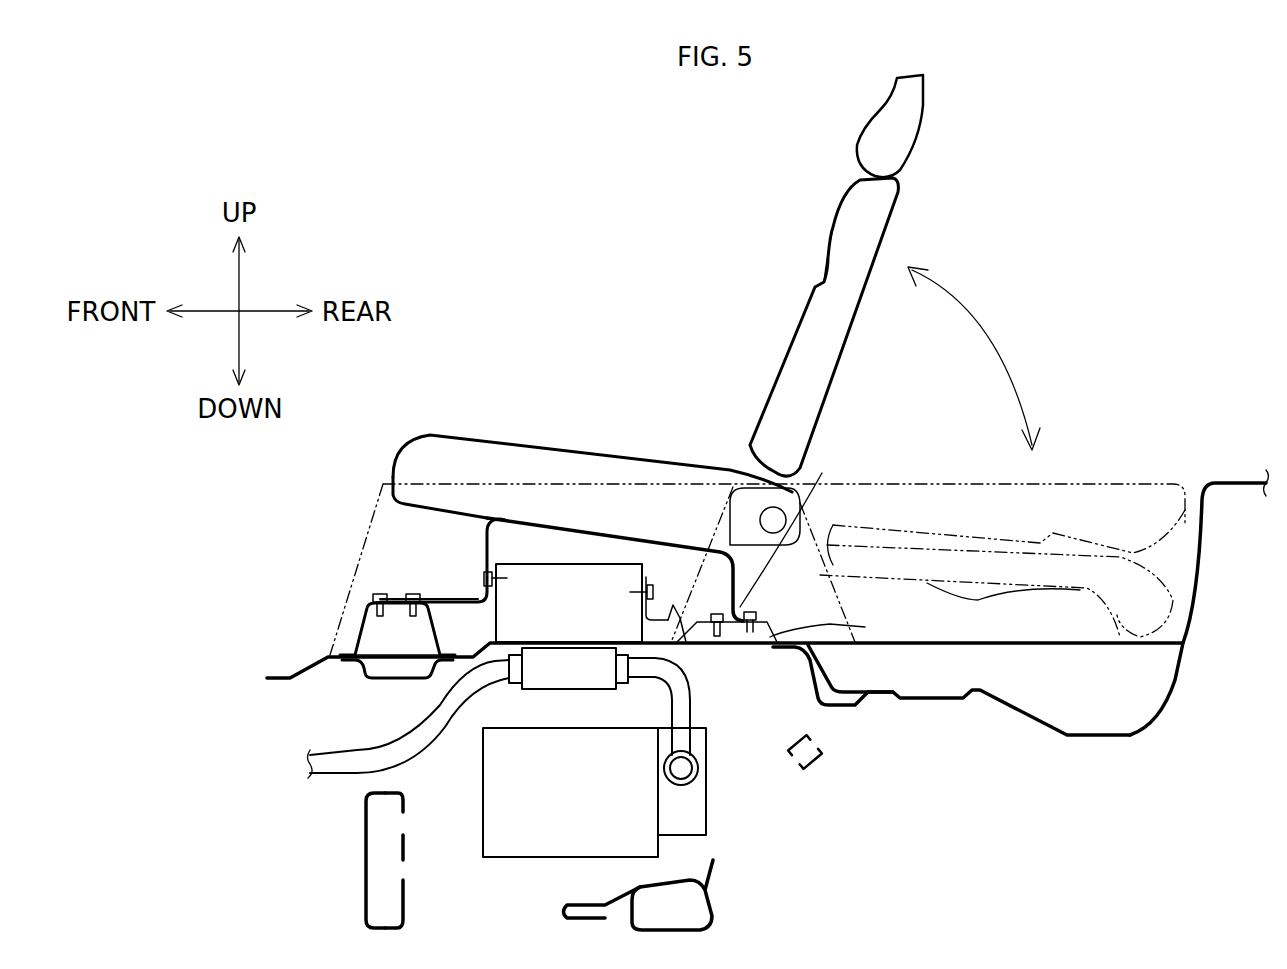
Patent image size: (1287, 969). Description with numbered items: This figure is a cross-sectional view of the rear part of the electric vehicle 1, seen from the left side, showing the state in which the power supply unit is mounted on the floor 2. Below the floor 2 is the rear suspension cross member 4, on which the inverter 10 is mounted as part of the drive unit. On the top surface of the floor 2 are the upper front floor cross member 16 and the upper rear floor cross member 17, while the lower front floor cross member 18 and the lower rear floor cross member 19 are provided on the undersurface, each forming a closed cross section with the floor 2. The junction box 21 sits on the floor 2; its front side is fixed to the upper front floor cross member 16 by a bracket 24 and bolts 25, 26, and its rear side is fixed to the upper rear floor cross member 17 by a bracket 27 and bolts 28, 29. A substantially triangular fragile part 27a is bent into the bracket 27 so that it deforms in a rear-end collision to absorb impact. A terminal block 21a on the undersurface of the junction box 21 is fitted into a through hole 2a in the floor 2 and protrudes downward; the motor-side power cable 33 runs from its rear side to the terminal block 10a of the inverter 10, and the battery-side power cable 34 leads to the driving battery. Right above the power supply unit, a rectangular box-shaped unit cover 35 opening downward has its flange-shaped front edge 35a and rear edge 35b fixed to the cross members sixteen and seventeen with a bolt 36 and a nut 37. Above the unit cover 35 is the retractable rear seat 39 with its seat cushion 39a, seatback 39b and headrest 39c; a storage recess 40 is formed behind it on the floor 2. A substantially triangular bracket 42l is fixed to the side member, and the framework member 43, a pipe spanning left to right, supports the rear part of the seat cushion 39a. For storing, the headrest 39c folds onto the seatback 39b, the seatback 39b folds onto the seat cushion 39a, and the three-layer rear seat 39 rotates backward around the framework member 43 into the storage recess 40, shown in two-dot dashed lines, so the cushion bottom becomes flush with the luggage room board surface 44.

The electric vehicle 1 is at (494, 266).
The floor 2 is at (267, 675).
The through hole 2a is at (523, 647).
The rear suspension cross member 4 is at (404, 893).
The inverter 10 is at (508, 858).
The terminal block 10a is at (692, 810).
The upper front floor cross member 16 is at (365, 627).
The upper rear floor cross member 17 is at (834, 624).
The lower front floor cross member 18 is at (388, 684).
The lower rear floor cross member 19 is at (850, 708).
The junction box 21 is at (592, 575).
The terminal block 21a is at (560, 690).
The bracket 24 is at (445, 598).
The bolt 25 is at (413, 593).
The bolt 26 is at (488, 571).
The bracket 27 is at (664, 608).
The fragile part 27a is at (690, 583).
The bolt 28 is at (717, 612).
The bolt 29 is at (646, 578).
The motor-side power cable 33 is at (700, 707).
The battery-side power cable 34 is at (338, 773).
The unit cover 35 is at (553, 530).
The front edge 35a is at (378, 596).
The rear edge 35b is at (757, 616).
The bolt 36 is at (380, 593).
The nut 37 is at (795, 526).
The rear seat 39 is at (792, 301).
The seat cushion 39a is at (598, 450).
The seatback 39b is at (833, 227).
The headrest 39c is at (873, 122).
The storage recess 40 is at (951, 510).
The bracket 42l is at (733, 487).
The framework member 43 is at (777, 505).
The luggage room board surface 44 is at (446, 435).